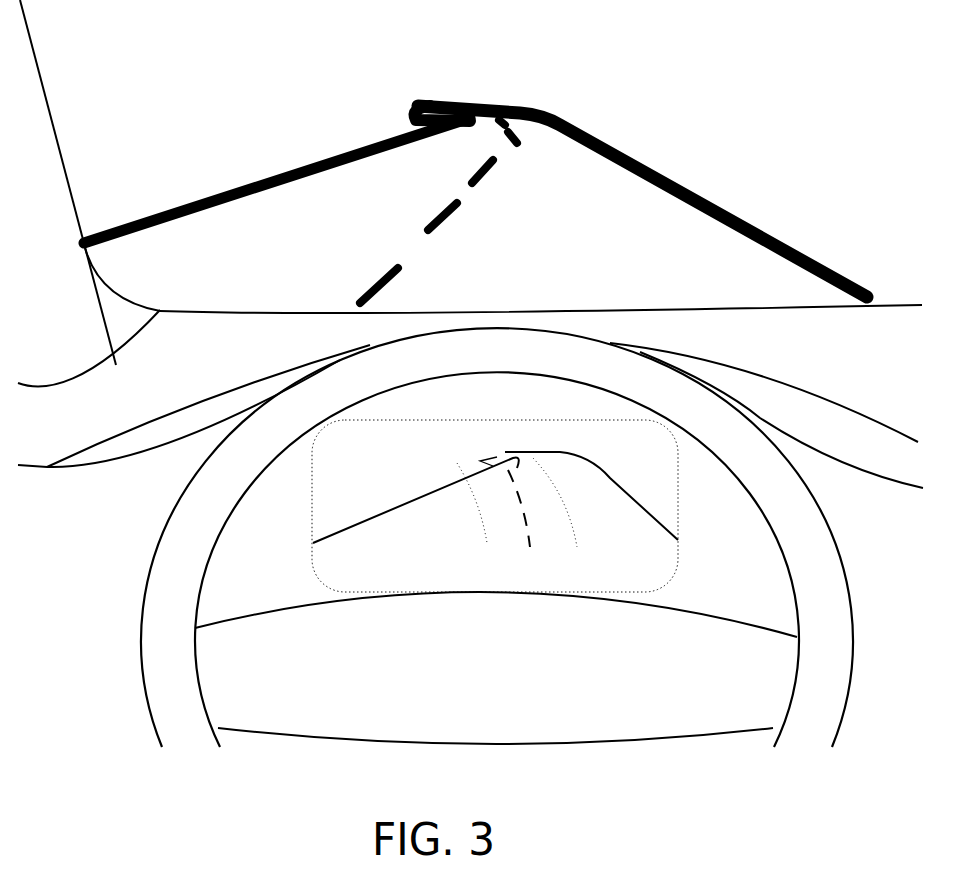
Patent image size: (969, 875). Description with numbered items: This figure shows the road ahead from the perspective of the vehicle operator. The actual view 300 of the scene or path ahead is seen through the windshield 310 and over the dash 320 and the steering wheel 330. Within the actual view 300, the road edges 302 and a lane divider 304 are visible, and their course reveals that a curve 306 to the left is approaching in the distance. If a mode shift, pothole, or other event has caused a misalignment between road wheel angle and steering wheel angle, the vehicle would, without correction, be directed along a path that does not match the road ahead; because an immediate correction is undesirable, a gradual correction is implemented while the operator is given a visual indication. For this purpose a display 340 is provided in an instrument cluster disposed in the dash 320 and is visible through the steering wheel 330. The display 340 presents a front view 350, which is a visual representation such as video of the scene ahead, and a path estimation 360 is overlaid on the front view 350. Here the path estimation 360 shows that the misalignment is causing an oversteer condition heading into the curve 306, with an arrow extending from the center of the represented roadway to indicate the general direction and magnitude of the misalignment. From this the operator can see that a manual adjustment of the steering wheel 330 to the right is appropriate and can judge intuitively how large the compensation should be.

The actual view 300 is at (680, 98).
The road edges 302 is at (283, 173).
The lane divider 304 is at (437, 218).
The curve 306 is at (460, 113).
The windshield 310 is at (107, 88).
The dash 320 is at (885, 340).
The steering wheel 330 is at (815, 665).
The display 340 is at (312, 564).
The front view 350 is at (607, 482).
The path estimation 360 is at (457, 463).